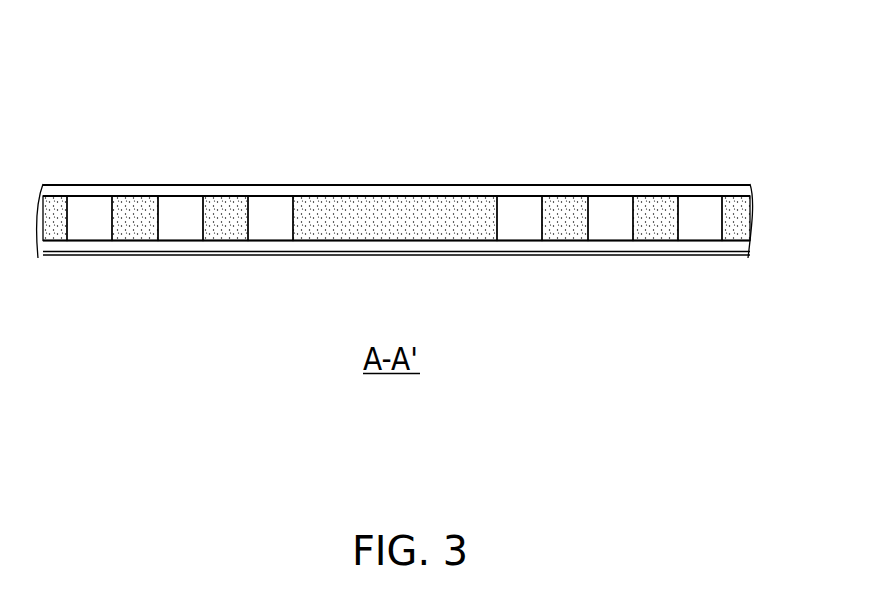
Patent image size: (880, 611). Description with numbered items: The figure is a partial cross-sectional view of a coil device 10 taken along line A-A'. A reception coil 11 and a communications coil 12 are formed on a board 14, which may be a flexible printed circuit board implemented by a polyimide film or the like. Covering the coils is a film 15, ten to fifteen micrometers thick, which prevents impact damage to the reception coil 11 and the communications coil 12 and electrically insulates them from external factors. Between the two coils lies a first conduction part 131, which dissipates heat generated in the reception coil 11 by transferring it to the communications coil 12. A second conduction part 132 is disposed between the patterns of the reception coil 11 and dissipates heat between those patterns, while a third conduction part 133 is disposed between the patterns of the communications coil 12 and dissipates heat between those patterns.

The coil device 10 is at (443, 44).
The reception coil 11 is at (267, 210).
The communications coil 12 is at (697, 210).
The first conduction part 131 is at (382, 210).
The second conduction part 132 is at (225, 233).
The third conduction part 133 is at (652, 233).
The board 14 is at (740, 248).
The film 15 is at (740, 191).